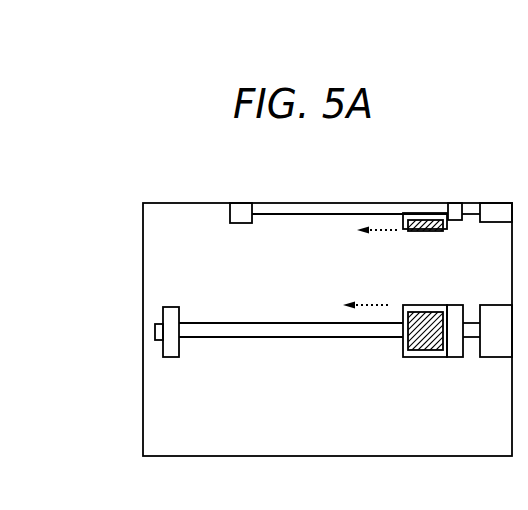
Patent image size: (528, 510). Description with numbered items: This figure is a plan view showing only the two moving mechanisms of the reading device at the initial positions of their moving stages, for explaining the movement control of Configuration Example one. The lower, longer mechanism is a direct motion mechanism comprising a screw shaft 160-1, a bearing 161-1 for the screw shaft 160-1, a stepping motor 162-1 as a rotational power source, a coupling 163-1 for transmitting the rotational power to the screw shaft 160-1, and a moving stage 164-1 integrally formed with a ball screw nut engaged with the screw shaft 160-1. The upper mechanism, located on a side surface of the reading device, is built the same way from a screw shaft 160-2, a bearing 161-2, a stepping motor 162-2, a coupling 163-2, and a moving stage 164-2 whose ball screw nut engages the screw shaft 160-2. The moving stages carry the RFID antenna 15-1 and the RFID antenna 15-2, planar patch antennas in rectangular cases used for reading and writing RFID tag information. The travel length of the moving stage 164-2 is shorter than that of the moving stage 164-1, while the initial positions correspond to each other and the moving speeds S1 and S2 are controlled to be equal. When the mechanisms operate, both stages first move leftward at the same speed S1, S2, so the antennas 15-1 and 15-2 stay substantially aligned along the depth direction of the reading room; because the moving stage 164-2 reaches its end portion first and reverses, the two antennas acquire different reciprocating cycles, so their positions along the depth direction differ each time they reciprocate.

The screw shaft 160-1 is at (240, 323).
The screw shaft 160-2 is at (322, 203).
The bearing 161-1 is at (170, 307).
The bearing 161-2 is at (241, 203).
The stepping motor 162-1 is at (492, 357).
The stepping motor 162-2 is at (495, 203).
The coupling 163-1 is at (456, 305).
The coupling 163-2 is at (452, 203).
The moving stage 164-1 is at (428, 362).
The moving stage 164-2 is at (426, 217).
The RFID antenna 15-1 is at (440, 357).
The RFID antenna 15-2 is at (418, 232).
The moving speed S1 is at (371, 304).
The moving speed S2 is at (383, 229).